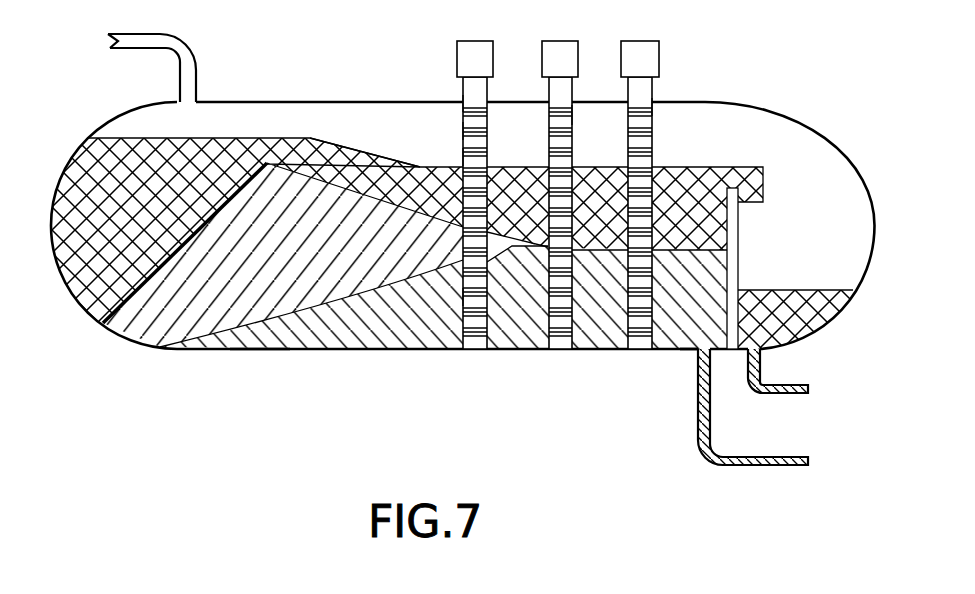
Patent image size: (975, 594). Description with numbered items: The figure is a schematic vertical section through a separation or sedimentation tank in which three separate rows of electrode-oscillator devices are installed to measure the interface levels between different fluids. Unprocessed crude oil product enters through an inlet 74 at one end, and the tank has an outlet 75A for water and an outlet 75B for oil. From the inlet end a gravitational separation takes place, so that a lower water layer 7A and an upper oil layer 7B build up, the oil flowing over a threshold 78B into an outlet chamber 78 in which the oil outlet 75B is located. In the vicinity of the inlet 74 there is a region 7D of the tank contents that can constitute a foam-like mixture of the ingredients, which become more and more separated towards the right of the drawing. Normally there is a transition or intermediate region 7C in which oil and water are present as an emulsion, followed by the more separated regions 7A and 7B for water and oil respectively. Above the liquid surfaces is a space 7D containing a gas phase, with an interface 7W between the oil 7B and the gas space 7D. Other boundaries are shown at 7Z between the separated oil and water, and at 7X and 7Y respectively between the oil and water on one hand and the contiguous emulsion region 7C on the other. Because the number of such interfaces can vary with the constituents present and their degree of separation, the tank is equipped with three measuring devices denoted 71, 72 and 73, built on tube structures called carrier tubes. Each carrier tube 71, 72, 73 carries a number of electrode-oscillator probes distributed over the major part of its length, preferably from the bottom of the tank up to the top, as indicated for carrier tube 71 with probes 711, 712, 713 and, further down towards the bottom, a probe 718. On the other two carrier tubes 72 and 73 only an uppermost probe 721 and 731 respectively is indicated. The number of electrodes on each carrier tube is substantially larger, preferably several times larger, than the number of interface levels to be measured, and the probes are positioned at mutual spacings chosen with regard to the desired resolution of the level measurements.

The carrier tube 71 is at (457, 72).
The carrier tube 72 is at (542, 72).
The carrier tube 73 is at (621, 72).
The probe 711 is at (463, 103).
The probe 712 is at (463, 130).
The probe 713 is at (463, 157).
The probe 718 is at (463, 297).
The uppermost probe 721 is at (573, 115).
The uppermost probe 731 is at (653, 106).
The inlet 74 is at (138, 48).
The outlet for water 75A is at (770, 457).
The outlet for oil 75B is at (793, 385).
The outlet chamber 78 is at (850, 228).
The threshold 78B is at (763, 168).
The lower water layer 7A is at (310, 349).
The upper oil layer 7B is at (690, 167).
The transition or intermediate region 7C is at (157, 318).
The region of foam-like mixture / gas space 7D is at (92, 193).
The interface 7W is at (730, 168).
The interface 7X is at (338, 147).
The interface 7Y is at (258, 349).
The interface 7Z is at (698, 252).